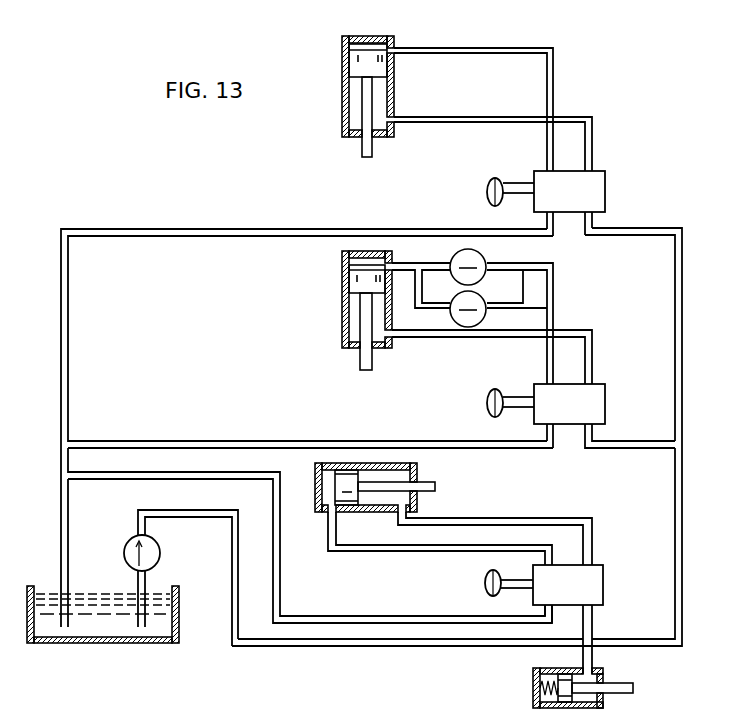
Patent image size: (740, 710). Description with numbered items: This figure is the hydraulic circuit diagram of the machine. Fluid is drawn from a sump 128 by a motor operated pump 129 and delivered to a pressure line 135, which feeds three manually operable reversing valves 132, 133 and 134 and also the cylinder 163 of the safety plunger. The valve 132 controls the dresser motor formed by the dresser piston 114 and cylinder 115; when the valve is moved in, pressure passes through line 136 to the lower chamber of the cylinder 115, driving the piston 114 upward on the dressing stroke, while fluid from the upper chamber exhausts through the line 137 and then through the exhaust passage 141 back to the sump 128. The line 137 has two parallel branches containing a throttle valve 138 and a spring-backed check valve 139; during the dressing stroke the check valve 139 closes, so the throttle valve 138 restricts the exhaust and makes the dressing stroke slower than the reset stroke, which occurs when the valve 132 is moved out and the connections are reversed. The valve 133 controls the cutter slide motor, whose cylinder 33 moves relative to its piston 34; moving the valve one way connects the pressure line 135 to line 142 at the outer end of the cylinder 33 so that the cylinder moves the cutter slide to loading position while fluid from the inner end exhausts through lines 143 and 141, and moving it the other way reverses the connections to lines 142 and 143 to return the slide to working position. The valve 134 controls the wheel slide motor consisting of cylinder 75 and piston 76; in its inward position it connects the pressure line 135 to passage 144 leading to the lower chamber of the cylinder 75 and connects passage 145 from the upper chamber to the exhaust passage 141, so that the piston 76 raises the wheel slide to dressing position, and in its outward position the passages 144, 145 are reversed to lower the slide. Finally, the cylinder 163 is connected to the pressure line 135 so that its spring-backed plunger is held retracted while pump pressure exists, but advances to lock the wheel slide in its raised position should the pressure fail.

The cutter slide motor cylinder 33 is at (393, 463).
The piston 34 is at (347, 480).
The wheel slide motor cylinder 75 is at (342, 107).
The piston 76 is at (360, 63).
The dresser piston 114 is at (362, 280).
The dresser cylinder 115 is at (342, 317).
The sump 128 is at (95, 642).
The motor operated pump 129 is at (160, 550).
The reversing valve 132 is at (528, 404).
The reversing valve 133 is at (528, 585).
The reversing valve 134 is at (528, 193).
The pressure line 135 is at (652, 229).
The line 136 is at (450, 337).
The exhaust line 137 is at (553, 290).
The throttle valve 138 is at (482, 253).
The spring-backed check valve 139 is at (483, 315).
The exhaust passage 141 is at (100, 475).
The line 142 is at (352, 547).
The line 143 is at (510, 518).
The passage 144 is at (507, 122).
The passage 145 is at (507, 50).
The cylinder 163 is at (582, 687).